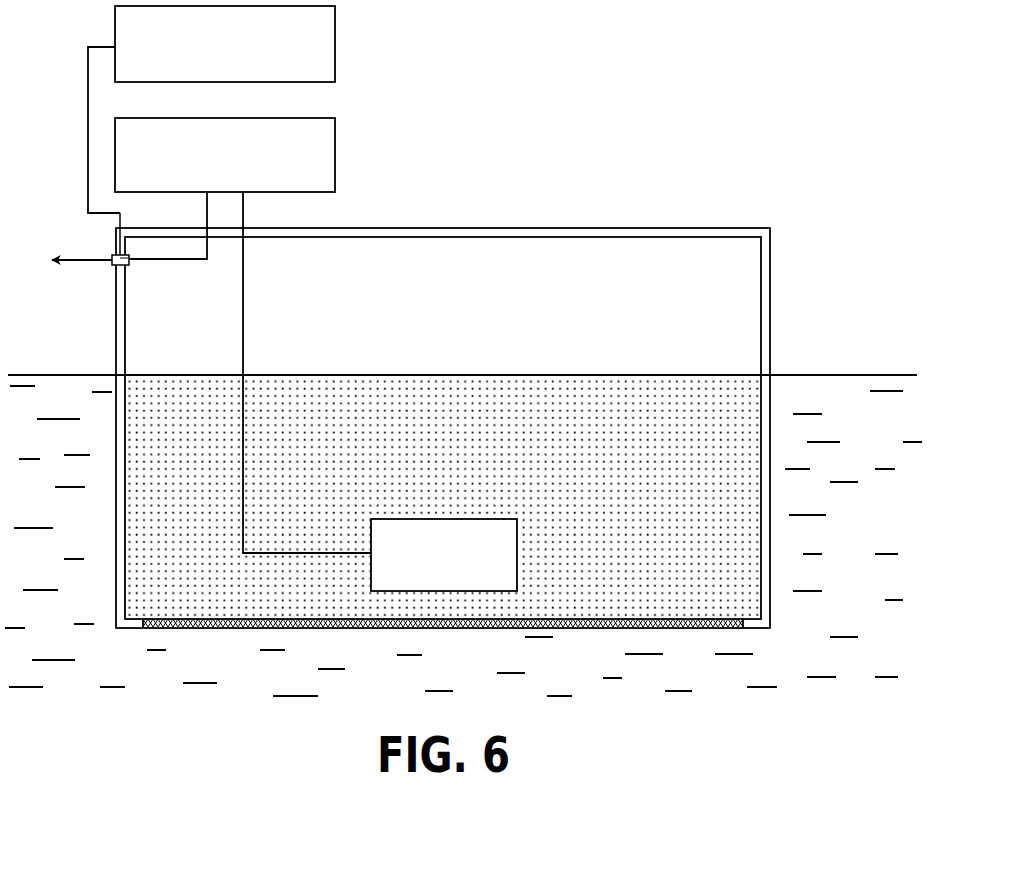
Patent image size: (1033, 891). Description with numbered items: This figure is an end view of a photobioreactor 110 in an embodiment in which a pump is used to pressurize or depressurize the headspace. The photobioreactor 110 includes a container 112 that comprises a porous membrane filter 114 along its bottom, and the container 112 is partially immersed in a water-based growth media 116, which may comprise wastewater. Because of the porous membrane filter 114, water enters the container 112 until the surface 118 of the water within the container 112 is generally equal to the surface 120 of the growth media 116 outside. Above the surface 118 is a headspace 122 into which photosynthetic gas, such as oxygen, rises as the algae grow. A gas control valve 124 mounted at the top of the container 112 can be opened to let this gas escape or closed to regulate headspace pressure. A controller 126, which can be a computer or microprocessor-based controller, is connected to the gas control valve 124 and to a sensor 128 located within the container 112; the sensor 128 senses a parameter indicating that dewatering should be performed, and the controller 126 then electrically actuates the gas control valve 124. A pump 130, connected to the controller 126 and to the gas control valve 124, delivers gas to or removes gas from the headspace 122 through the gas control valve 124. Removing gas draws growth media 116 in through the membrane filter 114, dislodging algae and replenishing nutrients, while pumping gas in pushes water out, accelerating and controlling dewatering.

The photobioreactor 110 is at (476, 317).
The container 112 is at (799, 296).
The porous membrane filter 114 is at (616, 618).
The water-based growth media 116 is at (898, 528).
The surface of the water within the container 118 is at (570, 374).
The surface of the growth media 120 is at (815, 374).
The headspace 122 is at (568, 273).
The gas control valve 124 is at (126, 266).
The controller 126 is at (246, 180).
The sensor 128 is at (466, 579).
The pump 130 is at (246, 70).